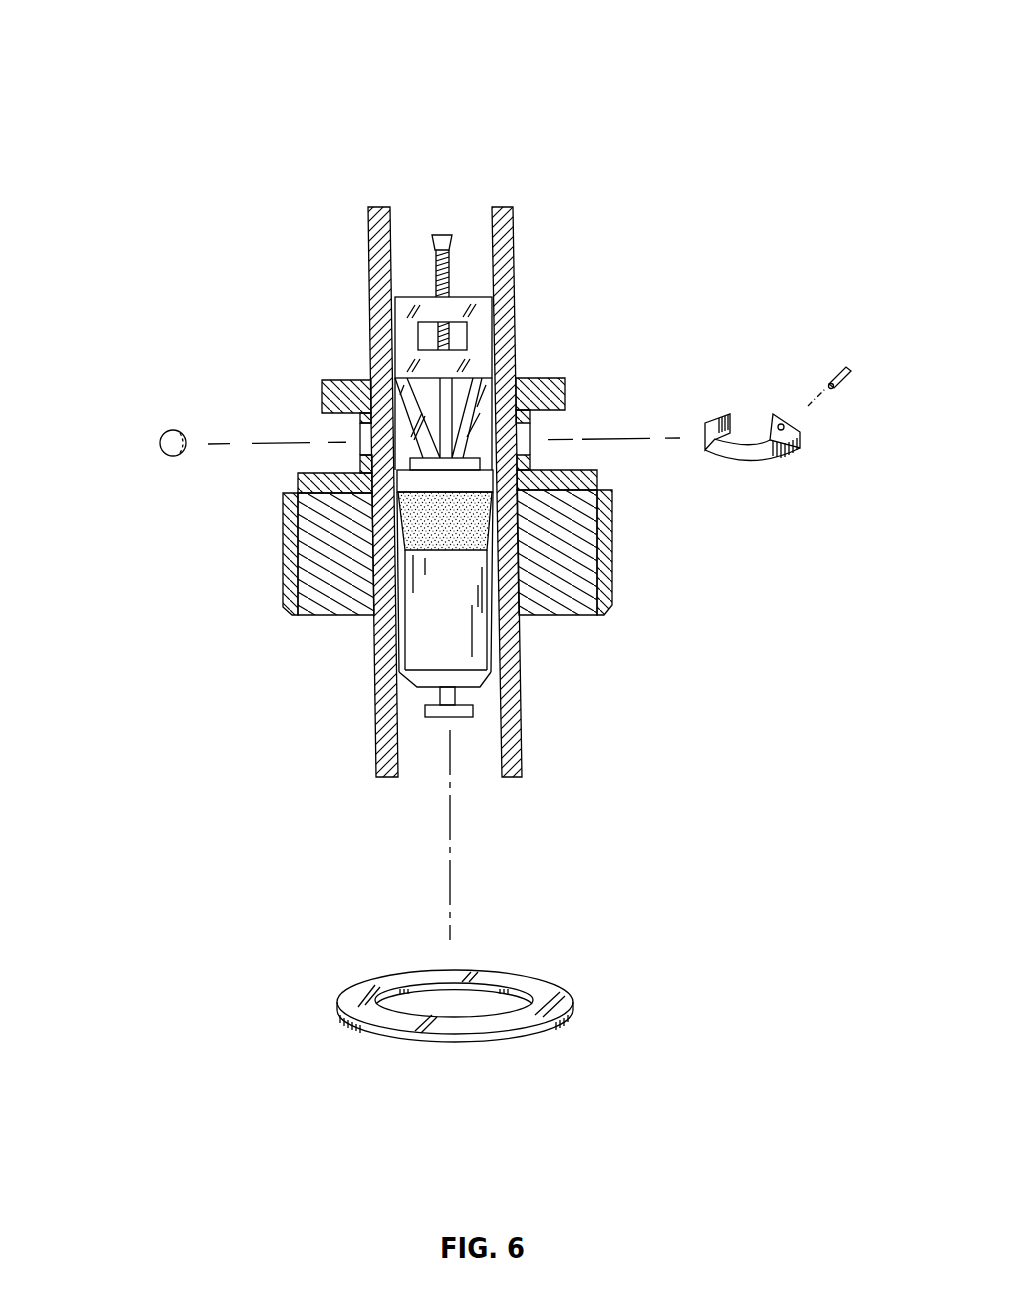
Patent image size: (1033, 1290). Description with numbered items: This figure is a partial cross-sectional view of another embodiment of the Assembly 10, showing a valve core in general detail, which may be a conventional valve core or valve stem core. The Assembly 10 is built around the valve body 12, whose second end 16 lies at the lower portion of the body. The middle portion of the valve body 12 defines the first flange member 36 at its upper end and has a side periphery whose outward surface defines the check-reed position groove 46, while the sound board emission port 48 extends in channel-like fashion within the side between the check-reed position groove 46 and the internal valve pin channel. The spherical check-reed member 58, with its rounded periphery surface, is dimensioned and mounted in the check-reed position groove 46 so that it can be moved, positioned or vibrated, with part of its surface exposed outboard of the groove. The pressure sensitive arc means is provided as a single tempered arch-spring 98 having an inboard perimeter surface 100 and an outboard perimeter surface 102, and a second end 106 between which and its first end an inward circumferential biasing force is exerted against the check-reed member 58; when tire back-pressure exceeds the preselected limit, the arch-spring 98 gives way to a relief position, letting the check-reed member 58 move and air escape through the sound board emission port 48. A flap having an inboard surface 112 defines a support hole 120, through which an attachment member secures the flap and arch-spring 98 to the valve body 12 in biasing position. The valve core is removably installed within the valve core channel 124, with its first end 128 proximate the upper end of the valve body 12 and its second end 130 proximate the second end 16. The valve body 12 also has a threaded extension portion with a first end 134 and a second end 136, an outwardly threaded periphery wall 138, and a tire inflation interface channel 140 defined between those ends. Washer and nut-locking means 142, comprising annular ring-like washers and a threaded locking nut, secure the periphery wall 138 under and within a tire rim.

The Assembly 10 is at (646, 348).
The valve body 12 is at (230, 408).
The second end 16 is at (330, 617).
The first flange member 36 is at (567, 392).
The check-reed position groove 46 is at (357, 442).
The sound board emission port 48 is at (357, 440).
The spherical check-reed member 58 is at (160, 443).
The arch-spring 98 is at (779, 431).
The inboard perimeter surface 100 is at (713, 417).
The outboard perimeter surface 102 is at (740, 454).
The second end 106 is at (733, 428).
The inboard surface 112 is at (777, 415).
The support hole 120 is at (787, 427).
The valve core channel 124 is at (472, 225).
The first end 128 is at (440, 234).
The second end 130 is at (445, 714).
The first end 134 is at (372, 635).
The second end 136 is at (345, 812).
The periphery wall 138 is at (513, 700).
The tire inflation interface channel 140 is at (486, 798).
The washer and nut-locking means 142 is at (650, 989).